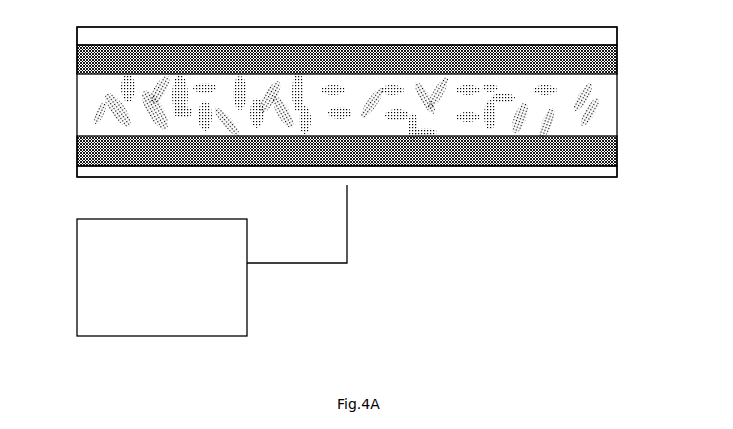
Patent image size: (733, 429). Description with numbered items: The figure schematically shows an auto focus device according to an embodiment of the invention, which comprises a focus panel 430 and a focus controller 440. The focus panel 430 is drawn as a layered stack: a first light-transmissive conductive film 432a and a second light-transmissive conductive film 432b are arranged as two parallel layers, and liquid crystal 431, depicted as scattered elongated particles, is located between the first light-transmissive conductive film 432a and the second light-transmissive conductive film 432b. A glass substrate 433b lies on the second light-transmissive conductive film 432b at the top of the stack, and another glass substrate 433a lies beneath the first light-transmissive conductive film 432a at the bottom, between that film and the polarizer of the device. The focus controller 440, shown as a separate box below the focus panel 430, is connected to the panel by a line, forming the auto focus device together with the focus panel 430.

The focus panel 430 is at (625, 39).
The liquid crystal 431 is at (68, 99).
The first light-transmissive conductive film 432a is at (76, 153).
The second light-transmissive conductive film 432b is at (76, 64).
The glass substrate 433a is at (75, 176).
The glass substrate 433b is at (73, 36).
The focus controller 440 is at (90, 243).